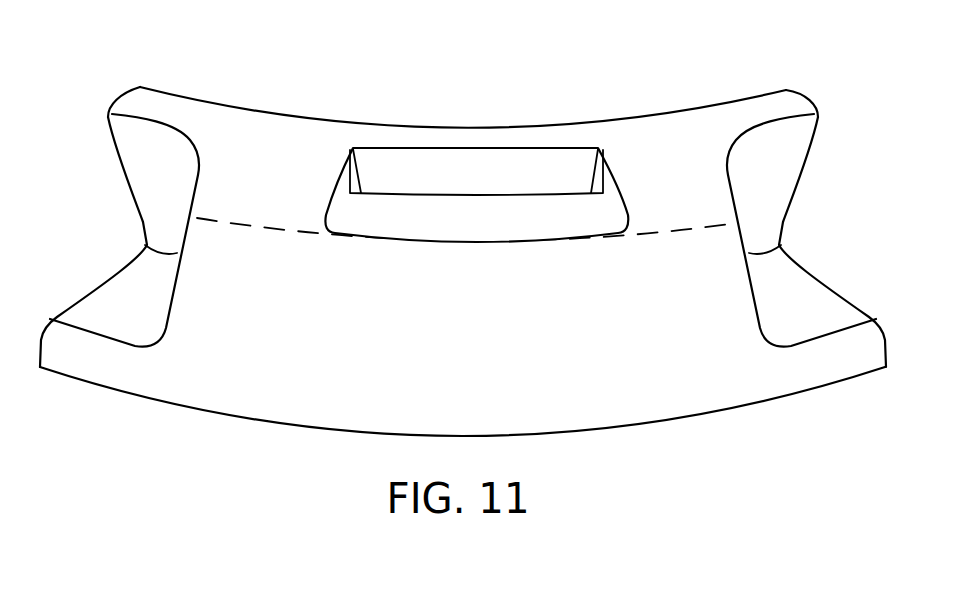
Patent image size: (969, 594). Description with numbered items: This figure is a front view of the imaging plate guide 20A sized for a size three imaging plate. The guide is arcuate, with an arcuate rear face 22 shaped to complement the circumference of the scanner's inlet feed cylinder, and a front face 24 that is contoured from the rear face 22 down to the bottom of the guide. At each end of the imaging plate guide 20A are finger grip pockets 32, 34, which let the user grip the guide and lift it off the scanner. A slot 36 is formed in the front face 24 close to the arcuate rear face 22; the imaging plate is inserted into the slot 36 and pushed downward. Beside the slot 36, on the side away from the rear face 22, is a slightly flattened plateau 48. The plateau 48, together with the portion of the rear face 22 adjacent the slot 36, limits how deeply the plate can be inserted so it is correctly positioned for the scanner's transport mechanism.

The imaging plate guide 20A is at (201, 450).
The arcuate rear face 22 is at (260, 110).
The front face 24 is at (442, 342).
The finger grip pocket 32 is at (113, 317).
The finger grip pocket 34 is at (776, 316).
The slot 36 is at (355, 186).
The plateau 48 is at (490, 229).